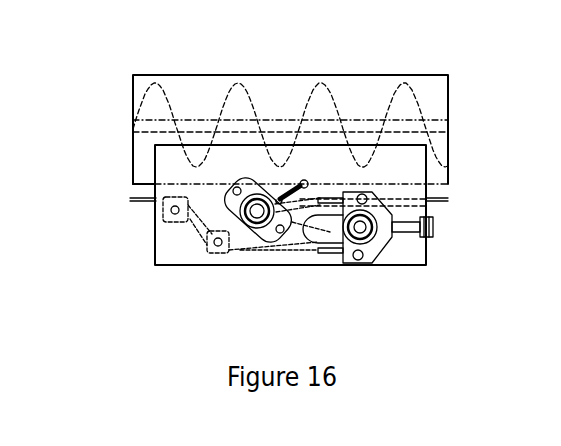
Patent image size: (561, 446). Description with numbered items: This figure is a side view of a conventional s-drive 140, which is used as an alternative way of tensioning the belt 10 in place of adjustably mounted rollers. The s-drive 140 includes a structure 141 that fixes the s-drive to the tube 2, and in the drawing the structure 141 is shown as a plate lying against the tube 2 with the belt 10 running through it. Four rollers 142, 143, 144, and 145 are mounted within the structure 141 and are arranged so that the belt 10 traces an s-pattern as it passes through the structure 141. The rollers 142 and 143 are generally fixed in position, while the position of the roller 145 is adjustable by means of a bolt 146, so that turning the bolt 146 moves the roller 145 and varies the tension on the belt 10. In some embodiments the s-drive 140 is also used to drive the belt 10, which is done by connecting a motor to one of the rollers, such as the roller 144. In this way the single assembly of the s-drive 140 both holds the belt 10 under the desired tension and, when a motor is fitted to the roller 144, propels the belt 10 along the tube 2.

The tube 2 is at (357, 88).
The belt 10 is at (130, 198).
The s-drive 140 is at (145, 294).
The structure 141 is at (408, 168).
The roller 142 is at (162, 217).
The roller 143 is at (214, 247).
The roller 144 is at (258, 222).
The roller 145 is at (370, 258).
The bolt 146 is at (433, 226).